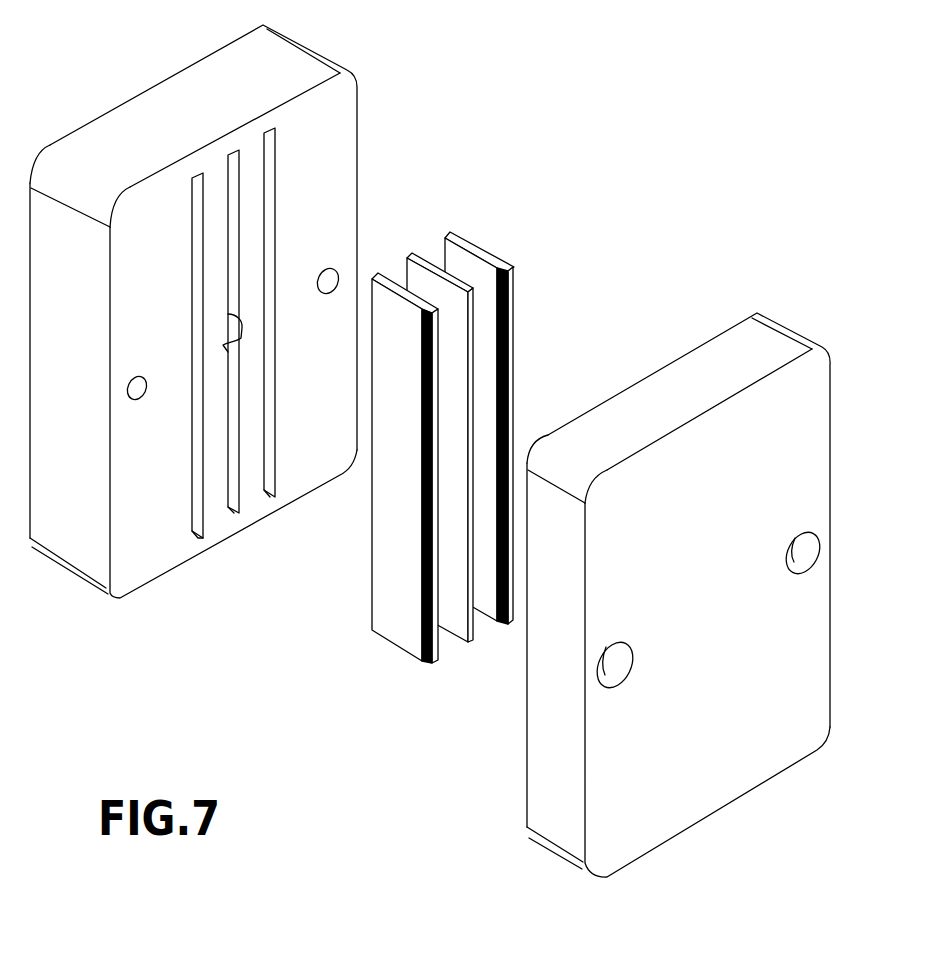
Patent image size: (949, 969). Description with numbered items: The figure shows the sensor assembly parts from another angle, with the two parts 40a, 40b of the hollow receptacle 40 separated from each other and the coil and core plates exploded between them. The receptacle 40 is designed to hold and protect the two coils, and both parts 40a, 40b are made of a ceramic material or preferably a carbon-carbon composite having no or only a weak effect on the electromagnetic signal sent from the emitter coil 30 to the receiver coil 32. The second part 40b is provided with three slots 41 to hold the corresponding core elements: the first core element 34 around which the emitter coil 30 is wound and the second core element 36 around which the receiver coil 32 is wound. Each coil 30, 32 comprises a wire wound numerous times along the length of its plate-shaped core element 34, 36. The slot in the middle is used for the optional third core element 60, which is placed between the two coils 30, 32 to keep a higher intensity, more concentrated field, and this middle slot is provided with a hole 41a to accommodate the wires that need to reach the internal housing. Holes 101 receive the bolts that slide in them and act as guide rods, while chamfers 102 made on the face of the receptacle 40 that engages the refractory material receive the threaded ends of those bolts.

The receptacle 40 is at (712, 205).
The first part of the receptacle 40a is at (738, 338).
The second part of the receptacle 40b is at (353, 142).
The slots 41 is at (230, 513).
The hole 41a is at (238, 333).
The side holes 101 is at (330, 273).
The chamfers 102 is at (805, 568).
The emitter coil 30 is at (506, 288).
The receiver coil 32 is at (423, 660).
The first core element 34 is at (528, 424).
The second core element 36 is at (375, 505).
The third core element 60 is at (460, 630).